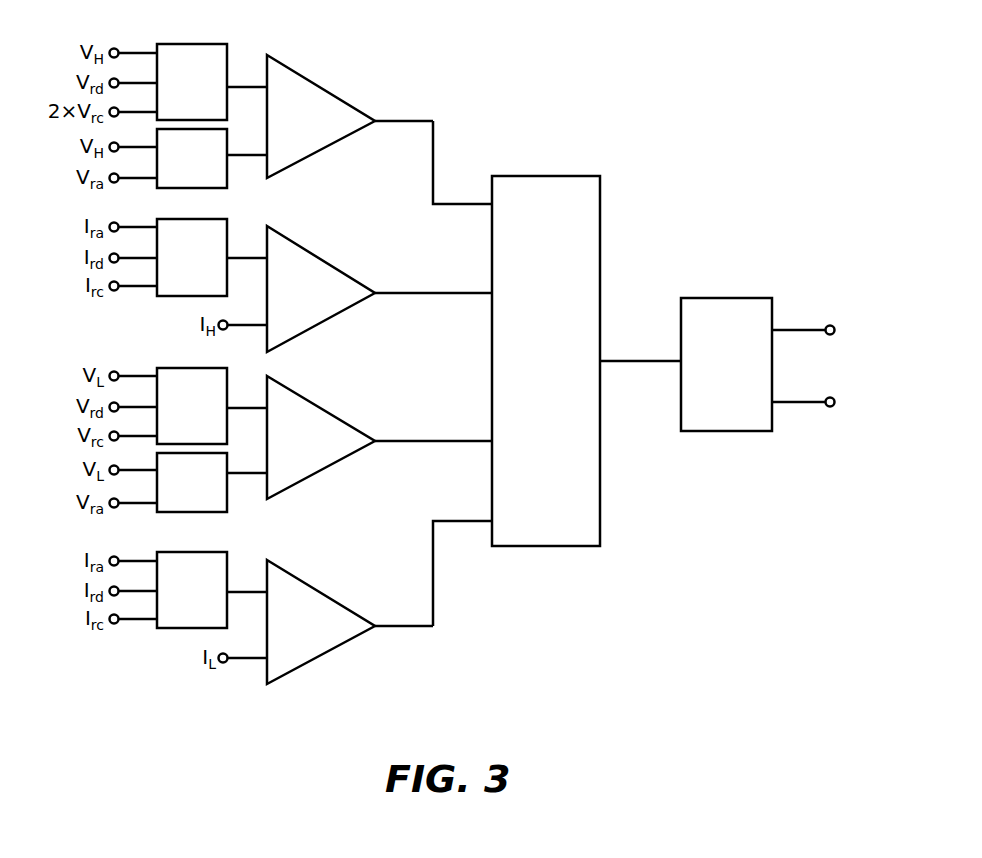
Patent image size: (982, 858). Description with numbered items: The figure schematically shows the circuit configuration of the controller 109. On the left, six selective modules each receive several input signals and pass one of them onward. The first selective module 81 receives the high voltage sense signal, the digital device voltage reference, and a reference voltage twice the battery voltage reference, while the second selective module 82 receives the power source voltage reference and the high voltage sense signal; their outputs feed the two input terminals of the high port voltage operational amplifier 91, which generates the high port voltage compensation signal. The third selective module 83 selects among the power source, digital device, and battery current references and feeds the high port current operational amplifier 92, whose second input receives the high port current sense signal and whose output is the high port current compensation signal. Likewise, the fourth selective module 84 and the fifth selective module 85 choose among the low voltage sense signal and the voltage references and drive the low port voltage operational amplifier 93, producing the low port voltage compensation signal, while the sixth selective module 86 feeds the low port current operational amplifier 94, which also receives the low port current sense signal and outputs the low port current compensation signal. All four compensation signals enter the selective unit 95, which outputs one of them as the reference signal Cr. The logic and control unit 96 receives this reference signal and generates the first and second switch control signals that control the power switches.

The first selective module 81 is at (212, 82).
The second selective module 82 is at (212, 158).
The third selective module 83 is at (212, 257).
The fourth selective module 84 is at (212, 406).
The fifth selective module 85 is at (212, 482).
The sixth selective module 86 is at (212, 590).
The high port voltage operational amplifier 91 is at (379, 129).
The high port current operational amplifier 92 is at (379, 289).
The low port voltage operational amplifier 93 is at (379, 437).
The low port current operational amplifier 94 is at (379, 602).
The selective unit 95 is at (586, 361).
The logic and control unit 96 is at (758, 364).
The controller 109 is at (772, 92).